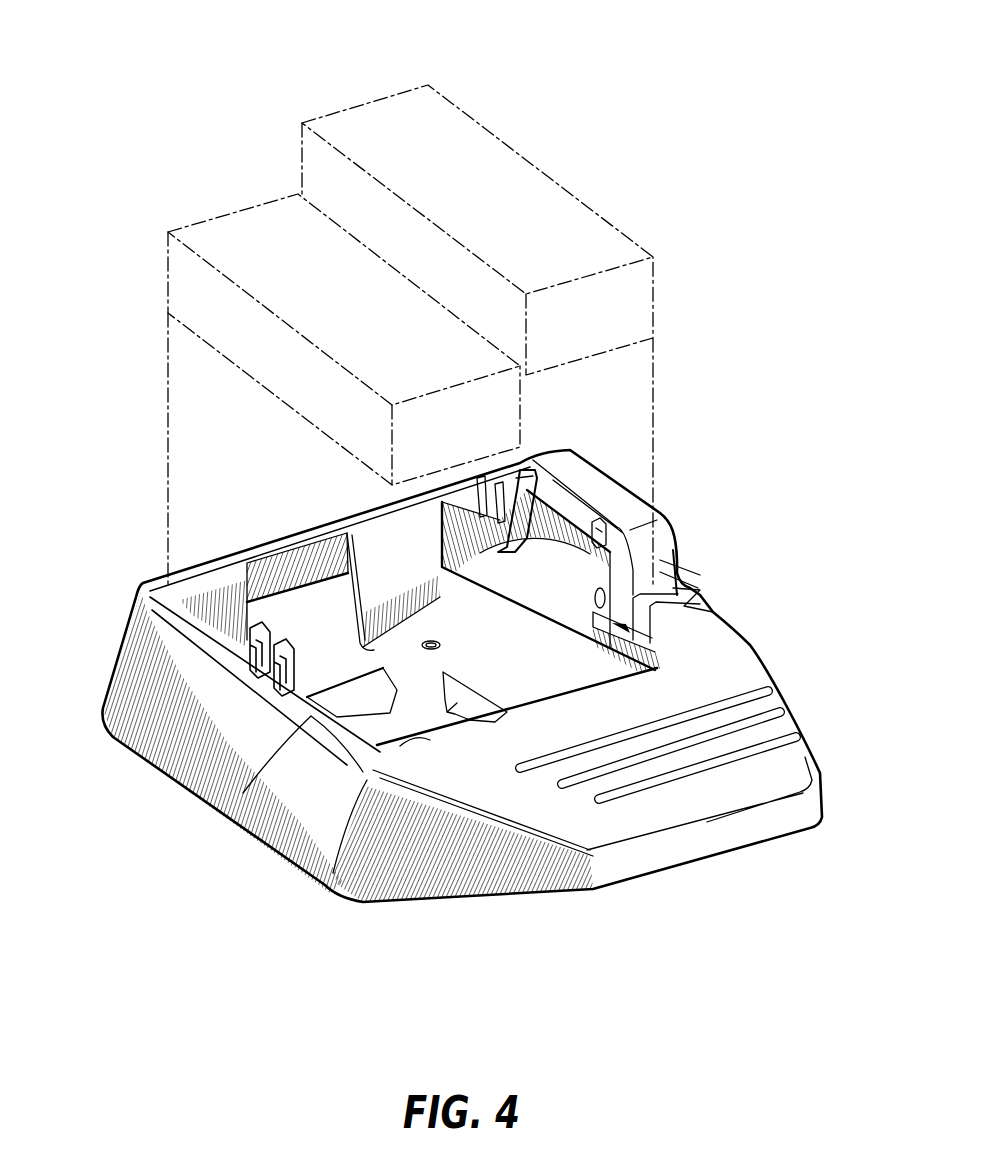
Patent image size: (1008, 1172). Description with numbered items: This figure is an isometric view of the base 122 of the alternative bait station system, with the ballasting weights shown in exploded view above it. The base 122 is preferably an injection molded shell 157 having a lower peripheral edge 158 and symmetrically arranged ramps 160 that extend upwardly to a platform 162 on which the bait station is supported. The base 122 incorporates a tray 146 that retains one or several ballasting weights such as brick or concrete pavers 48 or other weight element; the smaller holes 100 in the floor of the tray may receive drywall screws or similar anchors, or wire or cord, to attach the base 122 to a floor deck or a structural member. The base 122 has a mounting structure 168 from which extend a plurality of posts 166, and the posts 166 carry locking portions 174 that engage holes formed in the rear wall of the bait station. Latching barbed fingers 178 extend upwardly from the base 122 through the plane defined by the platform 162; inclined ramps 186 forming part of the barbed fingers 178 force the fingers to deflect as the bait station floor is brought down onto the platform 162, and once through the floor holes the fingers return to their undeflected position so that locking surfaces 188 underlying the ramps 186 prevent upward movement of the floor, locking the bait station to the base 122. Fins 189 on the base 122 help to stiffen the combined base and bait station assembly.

The pavers 48 is at (351, 96).
The base 122 is at (144, 540).
The tray 146 is at (340, 585).
The locking portions 174 is at (519, 482).
The posts 166 is at (600, 530).
The mounting structure 168 is at (675, 532).
The fins 189 is at (686, 593).
The ramps 160 is at (744, 672).
The inclined ramps 186 is at (366, 645).
The latching barbed fingers 178 is at (258, 628).
The holes 100 is at (438, 640).
The locking surfaces 188 is at (320, 697).
The shell 157 is at (618, 650).
The platform 162 is at (227, 803).
The lower peripheral edge 158 is at (657, 871).